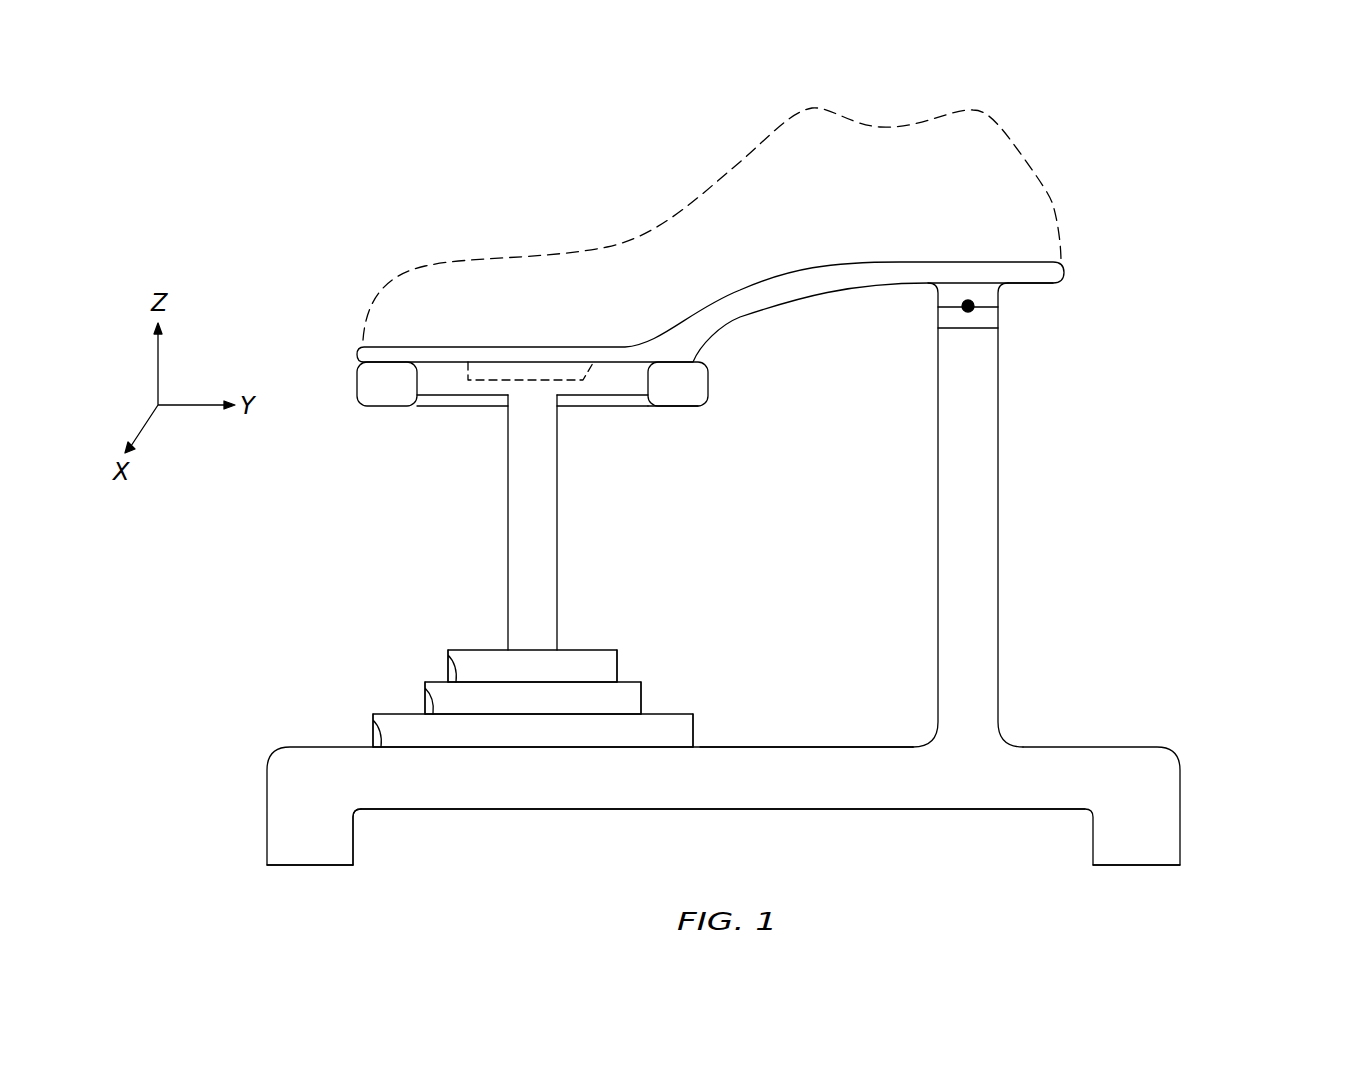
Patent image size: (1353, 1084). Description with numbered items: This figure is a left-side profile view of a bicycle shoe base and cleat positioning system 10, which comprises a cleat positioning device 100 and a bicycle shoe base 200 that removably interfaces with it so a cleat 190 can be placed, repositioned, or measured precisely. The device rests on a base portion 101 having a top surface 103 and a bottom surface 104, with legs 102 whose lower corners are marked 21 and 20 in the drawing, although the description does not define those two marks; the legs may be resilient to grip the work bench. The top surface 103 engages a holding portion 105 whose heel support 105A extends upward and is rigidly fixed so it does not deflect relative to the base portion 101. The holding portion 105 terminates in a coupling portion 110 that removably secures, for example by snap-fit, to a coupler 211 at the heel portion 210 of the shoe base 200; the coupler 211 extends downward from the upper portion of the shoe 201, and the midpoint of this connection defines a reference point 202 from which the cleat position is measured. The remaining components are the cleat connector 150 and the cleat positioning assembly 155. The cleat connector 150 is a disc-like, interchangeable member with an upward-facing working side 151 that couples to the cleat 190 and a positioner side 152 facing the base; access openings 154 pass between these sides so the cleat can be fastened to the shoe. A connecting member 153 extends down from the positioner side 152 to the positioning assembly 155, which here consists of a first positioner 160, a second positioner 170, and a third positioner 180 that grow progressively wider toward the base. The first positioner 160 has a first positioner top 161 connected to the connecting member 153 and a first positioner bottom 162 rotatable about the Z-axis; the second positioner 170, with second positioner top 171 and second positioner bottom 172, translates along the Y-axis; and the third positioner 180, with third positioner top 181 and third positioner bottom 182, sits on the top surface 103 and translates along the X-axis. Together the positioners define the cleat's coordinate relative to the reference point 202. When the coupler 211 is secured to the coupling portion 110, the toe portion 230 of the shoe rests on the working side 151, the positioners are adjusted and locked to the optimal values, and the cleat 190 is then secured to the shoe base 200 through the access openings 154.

The bicycle shoe base and cleat positioning system 10 is at (295, 221).
The second support foot 20 is at (1145, 883).
The first support foot 21 is at (301, 883).
The cleat positioning device 100 is at (308, 529).
The base portion 101 is at (1196, 813).
The legs 102 is at (340, 835).
The top surface 103 is at (775, 748).
The bottom surface 104 is at (725, 809).
The holding portion 105 is at (1035, 515).
The heel support 105A is at (985, 438).
The coupling portion 110 is at (1001, 318).
The cleat connector 150 is at (437, 390).
The working side 151 is at (708, 368).
The positioner side 152 is at (642, 409).
The connecting member 153 is at (550, 503).
The access openings 154 is at (465, 455).
The cleat positioning assembly 155 is at (468, 684).
The first positioner 160 is at (532, 666).
The first positioner top 161 is at (585, 649).
The first positioner bottom 162 is at (448, 656).
The second positioner 170 is at (533, 698).
The second positioner top 171 is at (622, 682).
The second positioner bottom 172 is at (425, 689).
The third positioner 180 is at (533, 730).
The third positioner top 181 is at (662, 714).
The third positioner bottom 182 is at (373, 722).
The cleat 190 is at (512, 378).
The bicycle shoe base 200 is at (810, 292).
The upper portion of the shoe 201 is at (1053, 200).
The reference point 202 is at (961, 308).
The heel portion 210 is at (1005, 229).
The coupler 211 is at (1003, 289).
The toe portion 230 is at (464, 287).